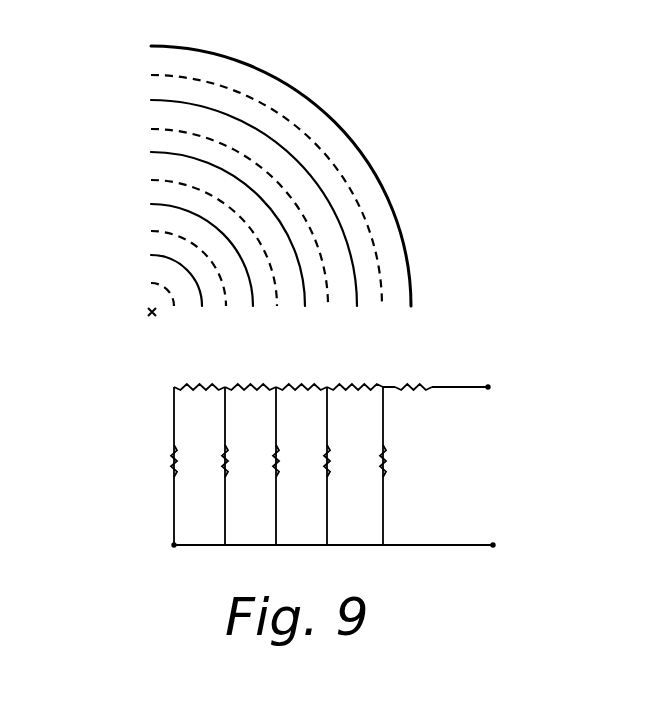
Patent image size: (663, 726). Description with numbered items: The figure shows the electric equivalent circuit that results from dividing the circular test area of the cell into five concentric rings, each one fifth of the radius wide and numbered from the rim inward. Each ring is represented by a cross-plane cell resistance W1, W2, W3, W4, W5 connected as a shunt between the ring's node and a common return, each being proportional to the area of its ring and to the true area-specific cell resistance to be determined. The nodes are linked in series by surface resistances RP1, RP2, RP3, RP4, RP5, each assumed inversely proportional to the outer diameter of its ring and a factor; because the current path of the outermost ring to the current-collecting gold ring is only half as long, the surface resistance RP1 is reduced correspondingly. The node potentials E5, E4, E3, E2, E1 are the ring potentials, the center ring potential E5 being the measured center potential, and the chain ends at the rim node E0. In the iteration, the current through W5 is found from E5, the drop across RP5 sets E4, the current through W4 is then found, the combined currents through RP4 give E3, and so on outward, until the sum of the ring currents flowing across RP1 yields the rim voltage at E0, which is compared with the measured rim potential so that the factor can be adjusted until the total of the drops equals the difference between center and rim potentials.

The rim potential node E0 is at (488, 372).
The potential of ring one E1 is at (383, 310).
The potential of ring two E2 is at (327, 310).
The potential of ring three E3 is at (276, 310).
The potential of ring four E4 is at (225, 310).
The center ring potential E5 is at (174, 310).
The surface resistance of ring one RP1 is at (417, 407).
The surface resistance of ring two RP2 is at (355, 407).
The surface resistance of ring three RP3 is at (301, 407).
The surface resistance of ring four RP4 is at (250, 407).
The surface resistance of ring five RP5 is at (199, 407).
The cross-plane cell resistance of ring one W1 is at (405, 464).
The cross-plane cell resistance of ring two W2 is at (345, 464).
The cross-plane cell resistance of ring three W3 is at (294, 464).
The cross-plane cell resistance of ring four W4 is at (243, 464).
The cross-plane cell resistance of ring five W5 is at (192, 464).